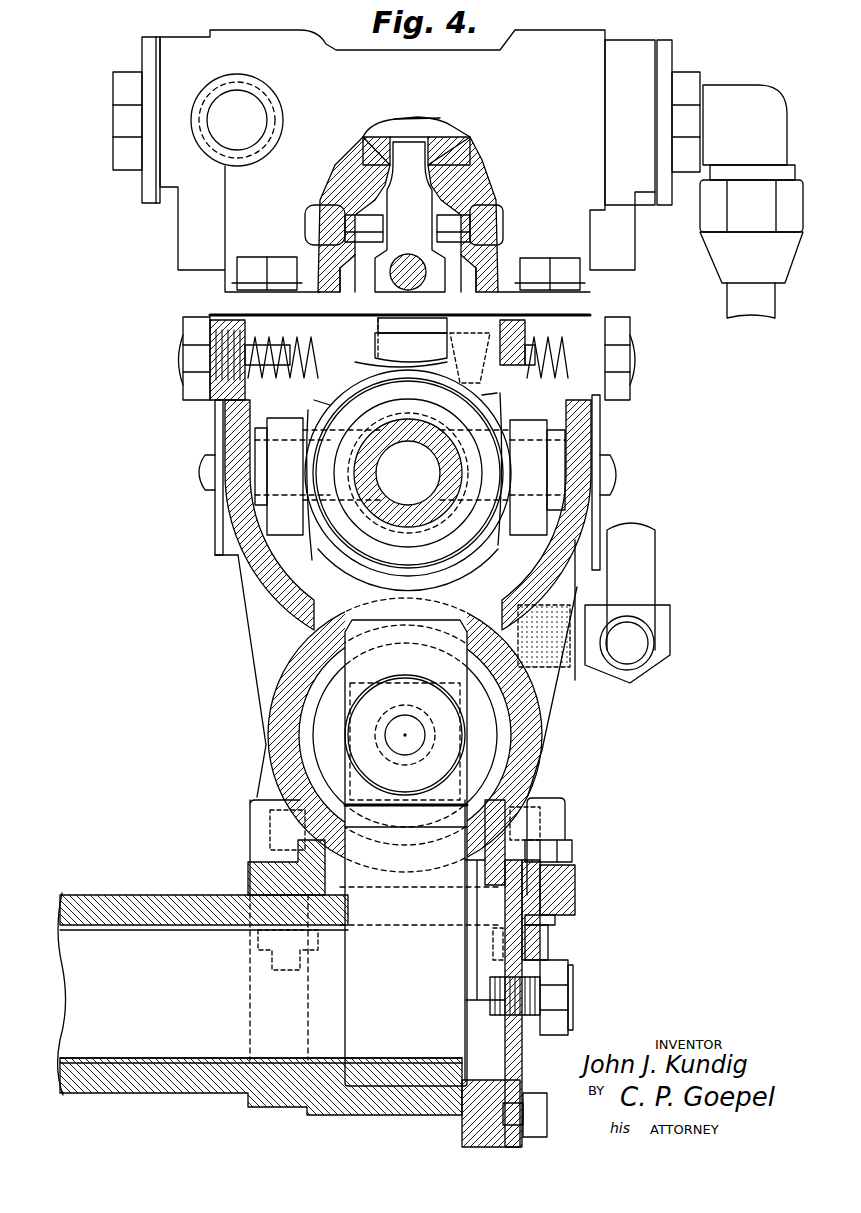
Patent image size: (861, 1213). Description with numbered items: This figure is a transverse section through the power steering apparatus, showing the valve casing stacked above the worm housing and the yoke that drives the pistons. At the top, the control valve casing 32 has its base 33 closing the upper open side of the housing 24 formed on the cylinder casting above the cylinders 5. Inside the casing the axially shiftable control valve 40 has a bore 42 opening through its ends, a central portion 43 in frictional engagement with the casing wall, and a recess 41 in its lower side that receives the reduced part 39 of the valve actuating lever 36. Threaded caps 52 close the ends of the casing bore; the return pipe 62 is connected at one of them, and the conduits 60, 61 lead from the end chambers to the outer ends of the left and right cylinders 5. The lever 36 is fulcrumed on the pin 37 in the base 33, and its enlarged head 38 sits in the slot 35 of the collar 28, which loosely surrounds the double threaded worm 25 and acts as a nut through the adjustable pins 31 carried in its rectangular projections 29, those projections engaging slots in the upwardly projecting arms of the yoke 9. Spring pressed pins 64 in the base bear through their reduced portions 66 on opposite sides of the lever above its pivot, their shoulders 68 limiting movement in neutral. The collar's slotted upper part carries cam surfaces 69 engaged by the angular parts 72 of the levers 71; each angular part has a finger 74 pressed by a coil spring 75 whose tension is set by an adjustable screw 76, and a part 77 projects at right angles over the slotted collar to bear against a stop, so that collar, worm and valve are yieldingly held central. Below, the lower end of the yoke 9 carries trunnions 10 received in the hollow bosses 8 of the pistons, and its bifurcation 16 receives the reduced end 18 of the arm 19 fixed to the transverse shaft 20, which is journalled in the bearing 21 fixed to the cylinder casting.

The cylinder 5 is at (540, 723).
The hollow boss or extension 8 is at (483, 752).
The yoke member 9 is at (358, 618).
The trunnion 10 is at (375, 768).
The recess or bifurcation 16 is at (372, 677).
The upper reduced end 18 is at (463, 697).
The arm 19 is at (405, 842).
The shaft 20 is at (260, 1004).
The bearing 21 is at (293, 905).
The housing 24 is at (235, 437).
The double threaded screw or worm 25 is at (372, 430).
The collar 28 is at (482, 411).
The rectangular projection 29 is at (298, 412).
The adjustable screw or pin 31 is at (250, 489).
The control valve casing 32 is at (346, 60).
The base 33 is at (240, 298).
The slot 35 is at (412, 336).
The valve actuating lever 36 is at (410, 217).
The pin 37 is at (416, 286).
The enlarged head 38 is at (411, 347).
The reduced part 39 is at (400, 150).
The control valve 40 is at (470, 154).
The slot or recess 41 is at (426, 140).
The bore 42 is at (410, 128).
The central portion 43 is at (450, 150).
The threaded cap or plug 52 is at (120, 138).
The pipe or conduit 60 is at (237, 120).
The pipe or conduit 61 is at (640, 568).
The return pipe 62 is at (751, 201).
The spring pressed pin or plunger 64 is at (546, 204).
The cylindrically reduced portion 66 is at (407, 228).
The shoulder 68 is at (340, 238).
The cam surface 69 is at (360, 365).
The lever 71 is at (520, 320).
The angular part 72 is at (520, 288).
The finger 74 is at (318, 348).
The coil spring 75 is at (238, 418).
The adjustable screw 76 is at (182, 350).
The part 77 is at (411, 283).